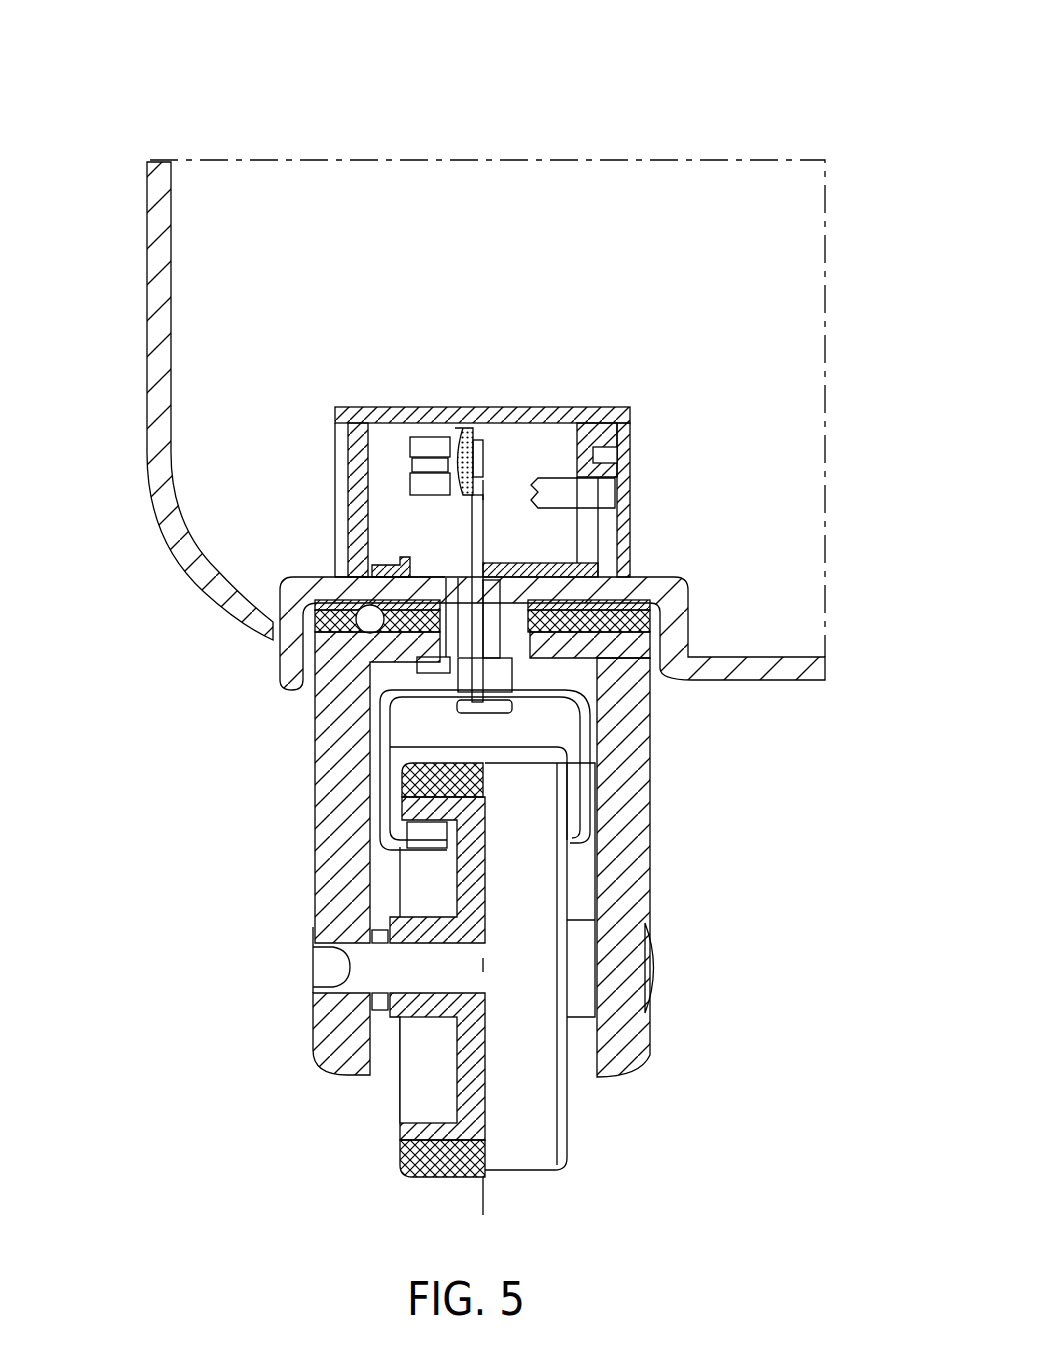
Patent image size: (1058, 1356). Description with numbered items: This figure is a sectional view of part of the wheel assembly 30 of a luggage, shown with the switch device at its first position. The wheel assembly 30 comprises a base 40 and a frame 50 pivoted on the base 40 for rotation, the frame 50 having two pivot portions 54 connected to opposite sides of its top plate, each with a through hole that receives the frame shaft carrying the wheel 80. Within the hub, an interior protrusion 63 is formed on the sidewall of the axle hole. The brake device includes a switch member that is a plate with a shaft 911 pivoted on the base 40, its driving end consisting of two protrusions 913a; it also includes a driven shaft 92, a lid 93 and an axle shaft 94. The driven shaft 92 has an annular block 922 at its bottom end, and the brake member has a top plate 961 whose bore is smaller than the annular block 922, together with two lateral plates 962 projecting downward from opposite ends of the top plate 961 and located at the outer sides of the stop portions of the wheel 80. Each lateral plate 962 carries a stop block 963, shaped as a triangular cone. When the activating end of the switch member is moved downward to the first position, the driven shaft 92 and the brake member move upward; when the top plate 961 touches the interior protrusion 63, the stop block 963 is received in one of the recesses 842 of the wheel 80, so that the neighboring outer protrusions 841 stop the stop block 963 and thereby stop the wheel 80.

The wheel assembly 30 is at (172, 95).
The base 40 is at (145, 285).
The frame 50 is at (515, 896).
The pivot portions 54 is at (655, 828).
The interior protrusion 63 is at (460, 648).
The wheel 80 is at (585, 1148).
The driven shaft 92 is at (463, 527).
The lid 93 is at (467, 437).
The axle shaft 94 is at (420, 467).
The shaft 911 is at (597, 493).
The protrusions 913a is at (427, 437).
The annular block 922 is at (495, 716).
The top plate 961 is at (530, 692).
The lateral plates 962 is at (380, 750).
The stop block 963 is at (427, 830).
The outer protrusions 841 is at (422, 1100).
The recesses 842 is at (420, 1123).